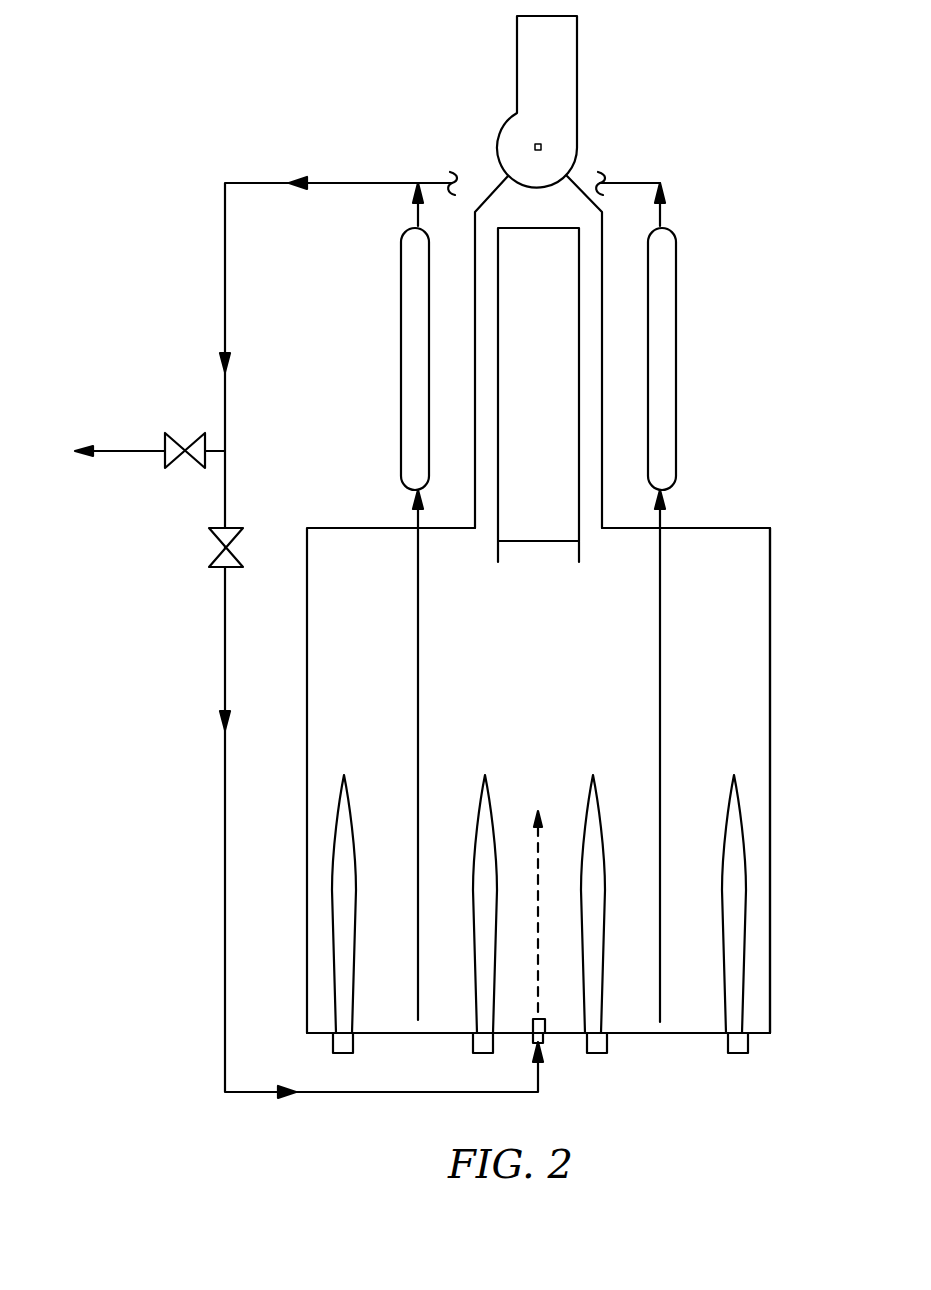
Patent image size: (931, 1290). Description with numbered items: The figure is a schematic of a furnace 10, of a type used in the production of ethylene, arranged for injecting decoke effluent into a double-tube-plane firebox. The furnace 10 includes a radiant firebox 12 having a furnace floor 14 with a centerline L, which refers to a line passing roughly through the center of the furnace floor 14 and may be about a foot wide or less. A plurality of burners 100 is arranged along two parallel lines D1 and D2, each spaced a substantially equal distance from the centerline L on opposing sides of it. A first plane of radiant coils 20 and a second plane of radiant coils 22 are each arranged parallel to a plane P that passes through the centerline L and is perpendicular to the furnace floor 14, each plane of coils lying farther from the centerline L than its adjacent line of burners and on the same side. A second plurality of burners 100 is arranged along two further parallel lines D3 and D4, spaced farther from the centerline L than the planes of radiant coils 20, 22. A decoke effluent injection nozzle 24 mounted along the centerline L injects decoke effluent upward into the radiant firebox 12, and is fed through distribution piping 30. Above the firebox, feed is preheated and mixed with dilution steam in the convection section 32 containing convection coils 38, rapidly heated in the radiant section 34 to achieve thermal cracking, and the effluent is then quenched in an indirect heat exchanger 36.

The furnace 10 is at (782, 464).
The radiant firebox 12 is at (770, 858).
The furnace floor 14 is at (683, 1034).
The first plane of radiant coils 20 is at (418, 775).
The second plane of radiant coils 22 is at (660, 775).
The decoke effluent injection nozzles 24 is at (545, 1038).
The distribution piping 30 is at (225, 1023).
The convection section 32 is at (604, 238).
The radiant section 34 is at (770, 626).
The indirect heat exchanger 36 is at (401, 430).
The convection coils 38 is at (581, 527).
The burners 100 is at (332, 1041).
The first parallel line of burners D1 is at (482, 1054).
The second parallel line of burners D2 is at (597, 1054).
The third parallel line of burners D3 is at (342, 1054).
The fourth parallel line of burners D4 is at (737, 1054).
The centerline L is at (530, 1038).
The plane P is at (540, 897).